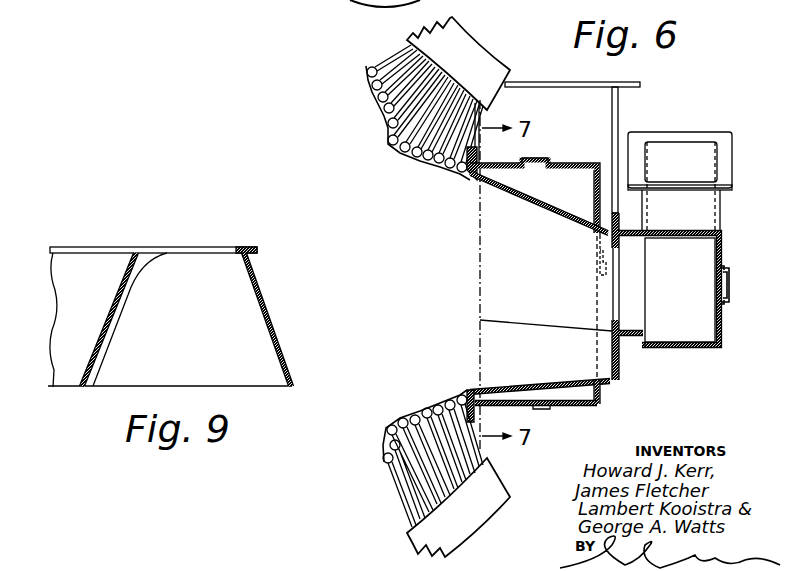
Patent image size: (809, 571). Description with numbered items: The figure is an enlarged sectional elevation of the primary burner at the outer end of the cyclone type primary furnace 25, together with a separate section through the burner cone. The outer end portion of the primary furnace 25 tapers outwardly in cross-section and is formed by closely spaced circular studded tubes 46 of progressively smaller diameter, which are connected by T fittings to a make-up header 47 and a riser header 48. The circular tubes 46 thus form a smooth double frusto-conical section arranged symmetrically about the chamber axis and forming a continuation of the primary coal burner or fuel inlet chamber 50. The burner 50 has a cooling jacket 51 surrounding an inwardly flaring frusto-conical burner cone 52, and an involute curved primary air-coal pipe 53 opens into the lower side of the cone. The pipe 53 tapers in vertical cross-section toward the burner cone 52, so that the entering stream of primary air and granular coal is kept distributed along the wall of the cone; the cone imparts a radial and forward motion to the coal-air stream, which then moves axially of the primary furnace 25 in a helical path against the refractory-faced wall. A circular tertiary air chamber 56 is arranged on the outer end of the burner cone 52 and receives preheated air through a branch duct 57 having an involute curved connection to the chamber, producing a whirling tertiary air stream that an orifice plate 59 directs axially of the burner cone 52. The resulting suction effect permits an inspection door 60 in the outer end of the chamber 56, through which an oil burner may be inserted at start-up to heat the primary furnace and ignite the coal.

In FIG. 6, the cyclone type primary furnace 25 is at (433, 294).
In FIG. 6, the circular studded tubes 46 is at (446, 404).
In FIG. 6, the make-up header 47 is at (475, 493).
In FIG. 6, the riser header 48 is at (457, 50).
In FIG. 6, the primary coal burner 50 is at (618, 378).
In FIG. 6, the cooling jacket 51 is at (575, 405).
In FIG. 6, the burner cone 52 is at (541, 212).
In FIG. 9, the burner cone 52 is at (263, 313).
In FIG. 6, the primary air-coal pipe 53 is at (590, 118).
In FIG. 6, the tertiary air chamber 56 is at (694, 292).
In FIG. 6, the branch duct 57 is at (693, 208).
In FIG. 6, the orifice plate 59 is at (618, 322).
In FIG. 6, the inspection door 60 is at (732, 287).